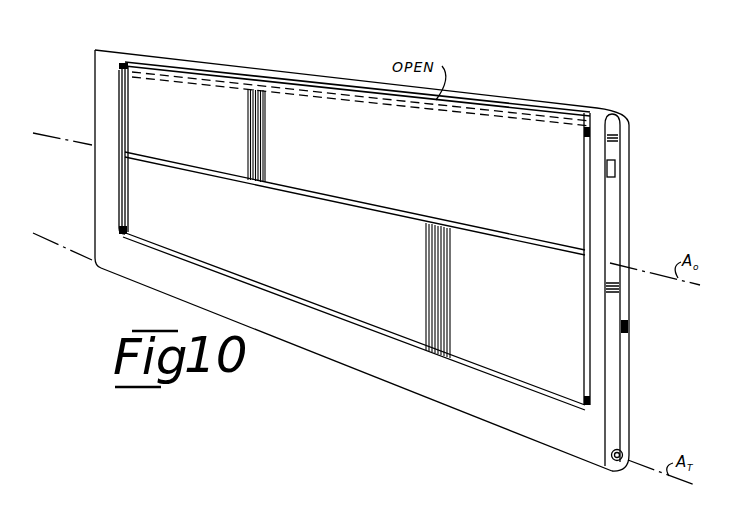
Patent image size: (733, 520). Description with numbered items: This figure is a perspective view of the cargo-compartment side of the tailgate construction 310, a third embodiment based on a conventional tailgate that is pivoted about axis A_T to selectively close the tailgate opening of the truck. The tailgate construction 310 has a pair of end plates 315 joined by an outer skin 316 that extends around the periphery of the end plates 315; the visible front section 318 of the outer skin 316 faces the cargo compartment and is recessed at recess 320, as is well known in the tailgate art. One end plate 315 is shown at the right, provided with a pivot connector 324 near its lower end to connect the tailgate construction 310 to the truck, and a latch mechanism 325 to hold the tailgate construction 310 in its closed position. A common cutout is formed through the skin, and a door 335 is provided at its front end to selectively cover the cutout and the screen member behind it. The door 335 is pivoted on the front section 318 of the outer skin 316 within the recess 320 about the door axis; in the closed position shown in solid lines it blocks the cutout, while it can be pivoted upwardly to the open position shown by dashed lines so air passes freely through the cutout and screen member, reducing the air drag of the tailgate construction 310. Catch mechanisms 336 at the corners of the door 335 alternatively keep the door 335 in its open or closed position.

The tailgate construction 310 is at (636, 113).
The end plates 315 is at (613, 223).
The outer skin 316 is at (103, 109).
The front section 318 is at (192, 295).
The recess 320 is at (477, 118).
The pivot connectors 324 is at (623, 453).
The latch mechanism 325 is at (616, 167).
The door 335 is at (328, 253).
The catch mechanisms 336 is at (124, 68).